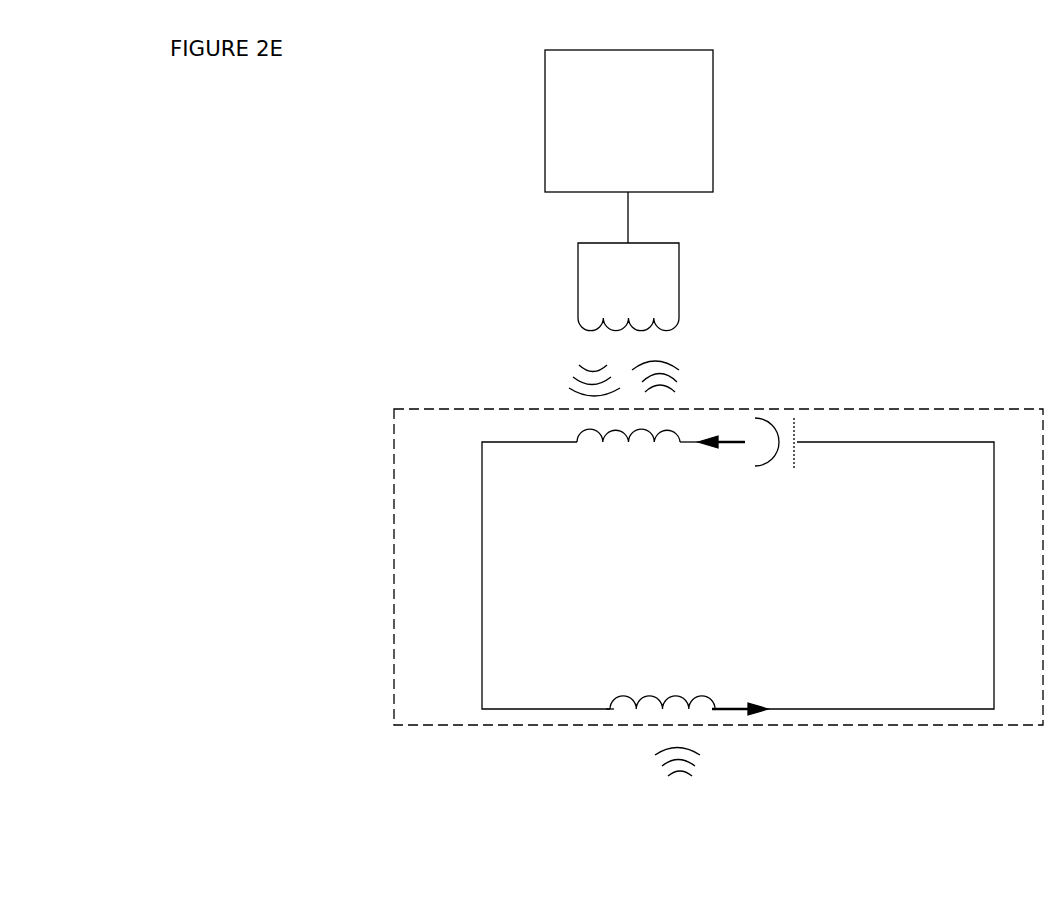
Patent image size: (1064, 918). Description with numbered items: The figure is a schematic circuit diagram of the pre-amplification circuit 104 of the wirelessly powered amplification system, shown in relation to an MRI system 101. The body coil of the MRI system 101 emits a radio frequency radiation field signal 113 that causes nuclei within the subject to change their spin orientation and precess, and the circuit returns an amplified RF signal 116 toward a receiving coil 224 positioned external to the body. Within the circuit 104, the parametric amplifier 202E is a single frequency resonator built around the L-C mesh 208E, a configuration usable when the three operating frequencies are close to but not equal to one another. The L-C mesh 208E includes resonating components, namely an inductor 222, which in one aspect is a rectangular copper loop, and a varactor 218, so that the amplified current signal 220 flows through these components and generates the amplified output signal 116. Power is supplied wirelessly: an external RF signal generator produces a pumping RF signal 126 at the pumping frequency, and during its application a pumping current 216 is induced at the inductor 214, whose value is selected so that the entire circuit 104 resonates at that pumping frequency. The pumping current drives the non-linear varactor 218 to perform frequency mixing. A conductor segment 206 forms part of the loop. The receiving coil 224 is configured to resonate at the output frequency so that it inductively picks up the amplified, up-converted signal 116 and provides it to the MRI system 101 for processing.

The MRI system 101 is at (663, 50).
The receiving coil 224 is at (679, 285).
The RF radiation field signal 113 is at (568, 378).
The amplified RF signal 116 is at (683, 372).
The pre-amplification circuit 104 is at (957, 409).
The parametric amplifier 202E is at (741, 528).
The L-C mesh 208E is at (738, 539).
The inductor 222 is at (617, 452).
The amplified current signal 220 is at (726, 445).
The varactor 218 is at (794, 418).
The inductor 214 is at (665, 690).
The pumping current 216 is at (742, 706).
The conductor segment 206 is at (612, 710).
The pumping RF signal 126 is at (678, 784).